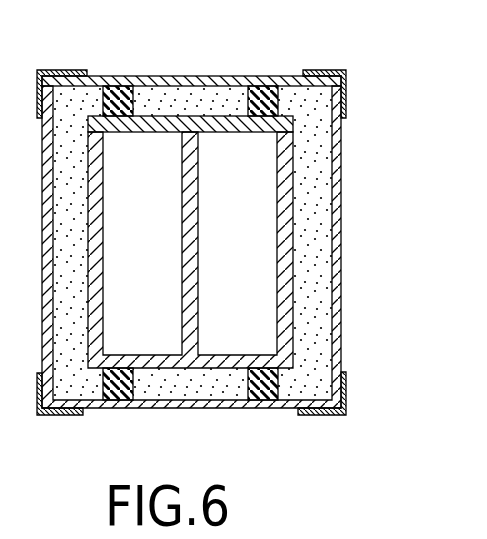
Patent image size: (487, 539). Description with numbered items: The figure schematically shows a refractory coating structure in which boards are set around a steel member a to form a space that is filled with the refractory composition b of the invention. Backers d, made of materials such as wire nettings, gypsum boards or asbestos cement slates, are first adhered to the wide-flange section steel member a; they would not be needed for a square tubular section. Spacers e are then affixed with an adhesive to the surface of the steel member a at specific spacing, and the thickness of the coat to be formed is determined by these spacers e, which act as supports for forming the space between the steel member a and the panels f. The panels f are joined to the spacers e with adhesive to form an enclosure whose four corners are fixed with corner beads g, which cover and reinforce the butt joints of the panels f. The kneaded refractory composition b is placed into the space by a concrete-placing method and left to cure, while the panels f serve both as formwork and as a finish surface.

The spacer e is at (262, 78).
The steel member a is at (293, 124).
The backer d is at (283, 200).
The panel f is at (340, 232).
The refractory composition b is at (317, 295).
The corner bead g is at (342, 388).